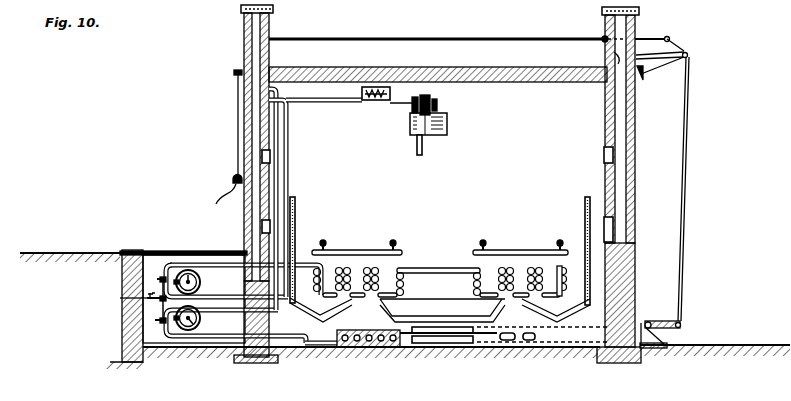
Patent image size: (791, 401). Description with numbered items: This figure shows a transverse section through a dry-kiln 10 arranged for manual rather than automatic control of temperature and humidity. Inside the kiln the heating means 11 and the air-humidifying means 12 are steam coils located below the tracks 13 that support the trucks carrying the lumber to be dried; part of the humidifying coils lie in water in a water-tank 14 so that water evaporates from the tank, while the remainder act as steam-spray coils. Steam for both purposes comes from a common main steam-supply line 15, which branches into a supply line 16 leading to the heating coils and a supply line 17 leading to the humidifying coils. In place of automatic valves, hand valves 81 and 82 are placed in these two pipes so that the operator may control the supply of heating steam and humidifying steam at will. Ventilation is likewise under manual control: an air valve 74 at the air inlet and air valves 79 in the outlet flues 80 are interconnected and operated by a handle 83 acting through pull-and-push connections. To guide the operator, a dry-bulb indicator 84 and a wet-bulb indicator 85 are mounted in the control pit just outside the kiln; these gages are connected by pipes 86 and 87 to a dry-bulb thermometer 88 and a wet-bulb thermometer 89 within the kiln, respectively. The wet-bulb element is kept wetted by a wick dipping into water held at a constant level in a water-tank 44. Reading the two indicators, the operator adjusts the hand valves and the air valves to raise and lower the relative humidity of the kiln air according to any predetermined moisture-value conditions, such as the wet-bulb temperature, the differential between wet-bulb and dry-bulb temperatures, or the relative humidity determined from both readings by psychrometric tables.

The dry-kiln 10 is at (635, 278).
The heating means 11 is at (433, 267).
The air-humidifying means 12 is at (365, 326).
The tracks 13 is at (396, 246).
The water-tank 14 is at (380, 348).
The main steam-supply line 15 is at (123, 307).
The supply line 16 is at (222, 267).
The supply line 17 is at (207, 344).
The water-tank 44 is at (447, 135).
The air valve 74 is at (680, 322).
The air valves 79 is at (277, 37).
The outlet flues 80 is at (257, 22).
The hand valve 81 is at (166, 277).
The hand valve 82 is at (158, 322).
The handle 83 is at (218, 199).
The dry-bulb indicator 84 is at (196, 272).
The wet-bulb indicator 85 is at (200, 319).
The pipe 86 is at (240, 287).
The pipe 87 is at (237, 333).
The dry-bulb thermometer 88 is at (396, 67).
The wet-bulb thermometer 89 is at (437, 103).